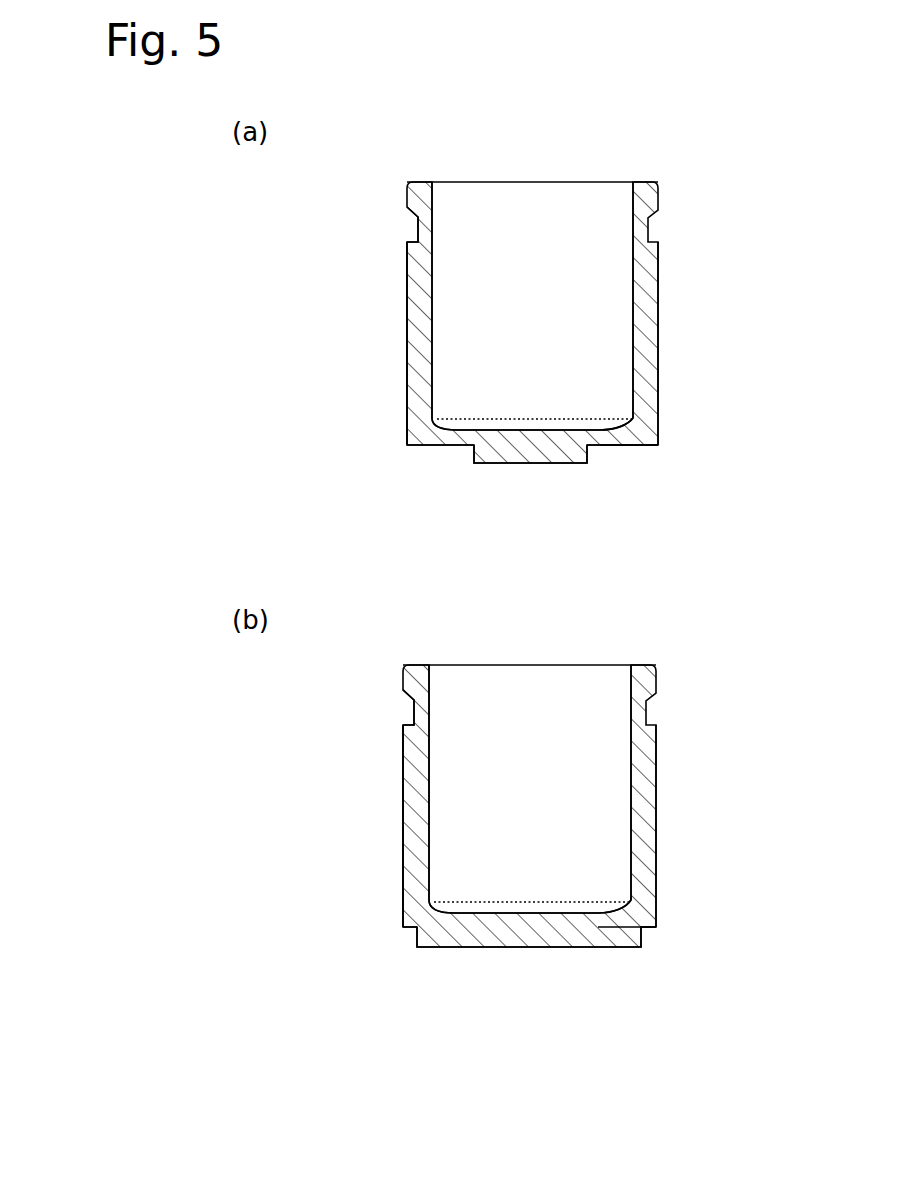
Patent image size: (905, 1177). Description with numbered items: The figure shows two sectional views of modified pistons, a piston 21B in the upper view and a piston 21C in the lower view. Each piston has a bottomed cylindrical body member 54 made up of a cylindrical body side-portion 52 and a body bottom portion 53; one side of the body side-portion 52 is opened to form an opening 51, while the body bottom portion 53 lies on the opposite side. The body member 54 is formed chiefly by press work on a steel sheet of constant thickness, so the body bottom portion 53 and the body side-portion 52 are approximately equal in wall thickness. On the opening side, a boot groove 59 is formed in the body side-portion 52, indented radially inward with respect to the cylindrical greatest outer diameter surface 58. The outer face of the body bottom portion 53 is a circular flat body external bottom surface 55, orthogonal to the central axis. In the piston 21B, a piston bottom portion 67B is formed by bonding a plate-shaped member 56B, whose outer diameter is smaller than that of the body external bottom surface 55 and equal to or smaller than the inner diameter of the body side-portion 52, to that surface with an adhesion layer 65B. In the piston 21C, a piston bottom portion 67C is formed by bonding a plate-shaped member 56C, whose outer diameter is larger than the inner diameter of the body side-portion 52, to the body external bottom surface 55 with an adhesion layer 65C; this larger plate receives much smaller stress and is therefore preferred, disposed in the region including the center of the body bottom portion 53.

The piston 21B is at (698, 246).
The piston 21C is at (696, 729).
The opening 51 is at (632, 196).
The body side-portion 52 is at (643, 310).
The body bottom portion 53 is at (573, 441).
The body member 54 is at (396, 354).
The body external bottom surface 55 is at (438, 446).
The plate-shaped member 56B is at (526, 464).
The plate-shaped member 56C is at (530, 948).
The greatest outer diameter surface 58 is at (407, 292).
The boot groove 59 is at (418, 222).
The adhesion layer 65B is at (553, 446).
The adhesion layer 65C is at (550, 928).
The piston bottom portion 67B is at (615, 440).
The piston bottom portion 67C is at (613, 948).